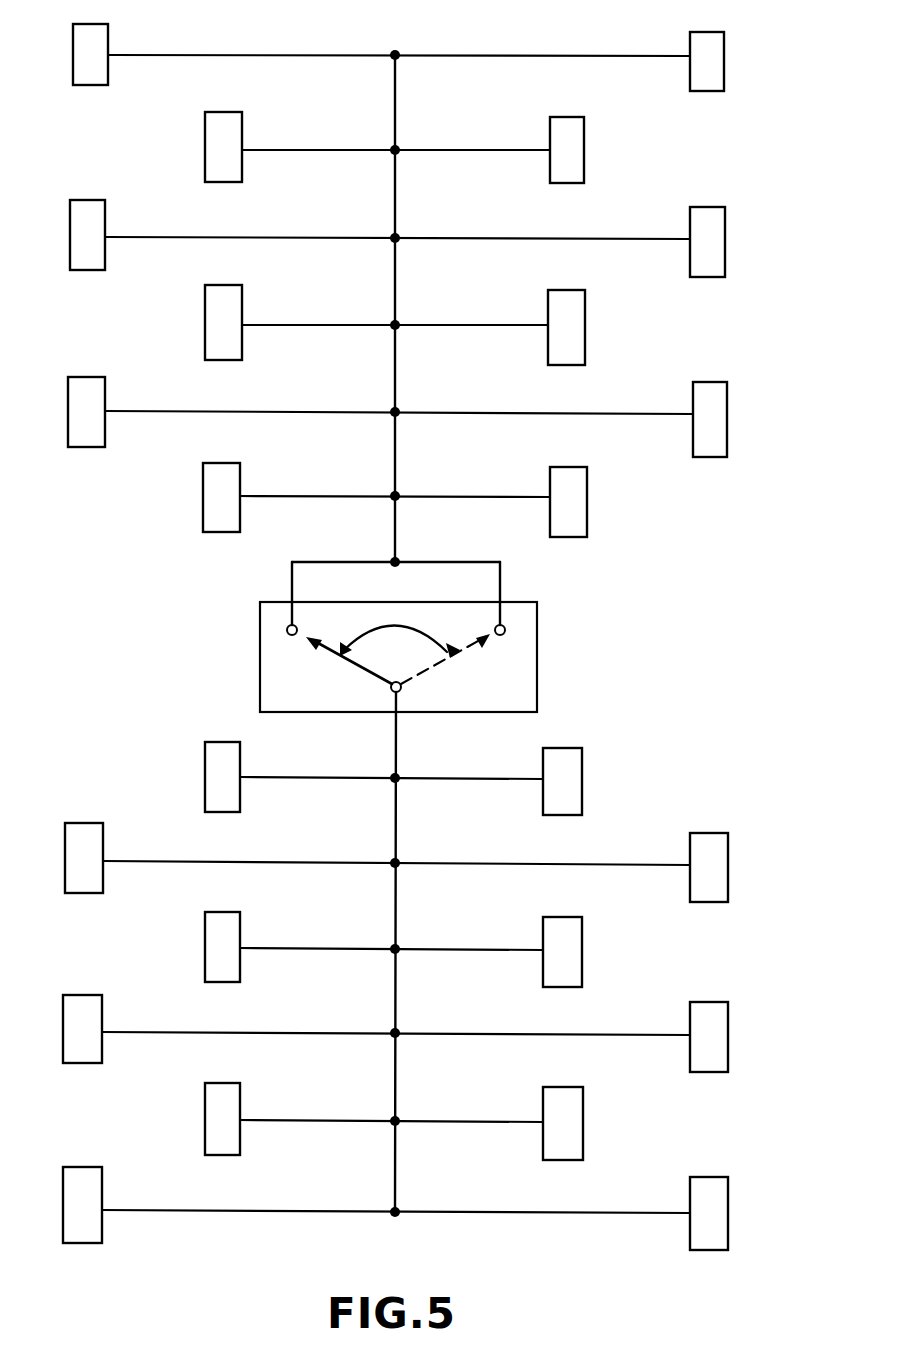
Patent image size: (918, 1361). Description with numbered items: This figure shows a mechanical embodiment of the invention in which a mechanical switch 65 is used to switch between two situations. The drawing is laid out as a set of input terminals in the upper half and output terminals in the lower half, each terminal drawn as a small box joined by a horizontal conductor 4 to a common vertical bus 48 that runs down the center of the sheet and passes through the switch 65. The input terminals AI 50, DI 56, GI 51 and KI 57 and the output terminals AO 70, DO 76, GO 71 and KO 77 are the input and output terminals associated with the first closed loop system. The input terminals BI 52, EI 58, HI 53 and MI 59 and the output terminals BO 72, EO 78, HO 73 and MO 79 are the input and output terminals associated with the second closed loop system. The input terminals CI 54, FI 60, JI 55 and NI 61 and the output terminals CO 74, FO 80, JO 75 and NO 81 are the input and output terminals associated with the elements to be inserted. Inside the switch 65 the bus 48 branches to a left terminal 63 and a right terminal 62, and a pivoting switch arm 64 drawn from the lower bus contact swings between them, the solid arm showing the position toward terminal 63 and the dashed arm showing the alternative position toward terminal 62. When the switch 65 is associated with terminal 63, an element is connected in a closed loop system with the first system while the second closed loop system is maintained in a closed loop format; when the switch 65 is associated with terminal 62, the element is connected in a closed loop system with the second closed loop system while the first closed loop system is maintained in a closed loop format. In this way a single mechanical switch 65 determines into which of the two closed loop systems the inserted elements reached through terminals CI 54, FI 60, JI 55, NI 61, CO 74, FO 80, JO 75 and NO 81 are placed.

The conductor 4 is at (270, 46).
The bus conductor 48 is at (280, 582).
The terminal AI 50 is at (108, 36).
The terminal GI 51 is at (724, 52).
The terminal BI 52 is at (242, 135).
The terminal HI 53 is at (584, 139).
The terminal CI 54 is at (105, 214).
The terminal JI 55 is at (725, 222).
The terminal DI 56 is at (242, 310).
The terminal KI 57 is at (585, 325).
The terminal EI 58 is at (105, 391).
The terminal MI 59 is at (727, 400).
The terminal FI 60 is at (203, 470).
The terminal NI 61 is at (587, 495).
The terminal 62 is at (505, 632).
The terminal 63 is at (287, 632).
The switch arm 64 is at (400, 692).
The mechanical switch 65 is at (537, 712).
The terminal AO 70 is at (205, 745).
The terminal GO 71 is at (582, 773).
The terminal BO 72 is at (68, 823).
The terminal HO 73 is at (728, 838).
The terminal CO 74 is at (205, 922).
The terminal JO 75 is at (582, 940).
The terminal DO 76 is at (68, 995).
The terminal KO 77 is at (728, 1005).
The terminal EO 78 is at (205, 1093).
The terminal MO 79 is at (583, 1102).
The terminal FO 80 is at (102, 1170).
The terminal NO 81 is at (728, 1182).